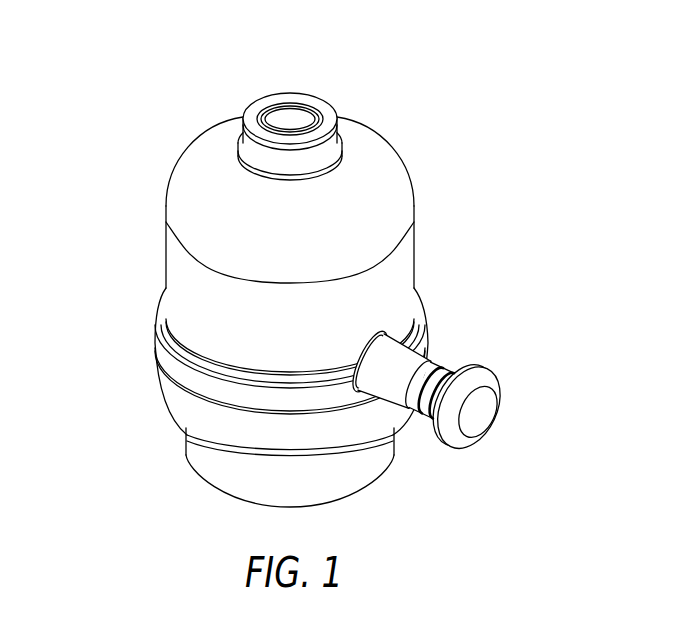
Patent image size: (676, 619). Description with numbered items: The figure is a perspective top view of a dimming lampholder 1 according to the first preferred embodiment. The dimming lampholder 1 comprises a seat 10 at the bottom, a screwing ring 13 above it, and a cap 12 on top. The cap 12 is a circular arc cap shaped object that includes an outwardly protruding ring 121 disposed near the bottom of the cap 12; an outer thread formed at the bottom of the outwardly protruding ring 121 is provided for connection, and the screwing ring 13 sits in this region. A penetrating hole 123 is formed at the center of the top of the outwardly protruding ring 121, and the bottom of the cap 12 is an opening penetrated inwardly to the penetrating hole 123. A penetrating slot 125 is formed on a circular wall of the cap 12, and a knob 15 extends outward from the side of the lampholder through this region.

The dimming lampholder 1 is at (453, 222).
The seat 10 is at (372, 472).
The cap 12 is at (382, 177).
The outwardly protruding ring 121 is at (178, 365).
The penetrating hole 123 is at (298, 120).
The penetrating slot 125 is at (387, 336).
The screwing ring 13 is at (177, 395).
The knob 15 is at (442, 380).